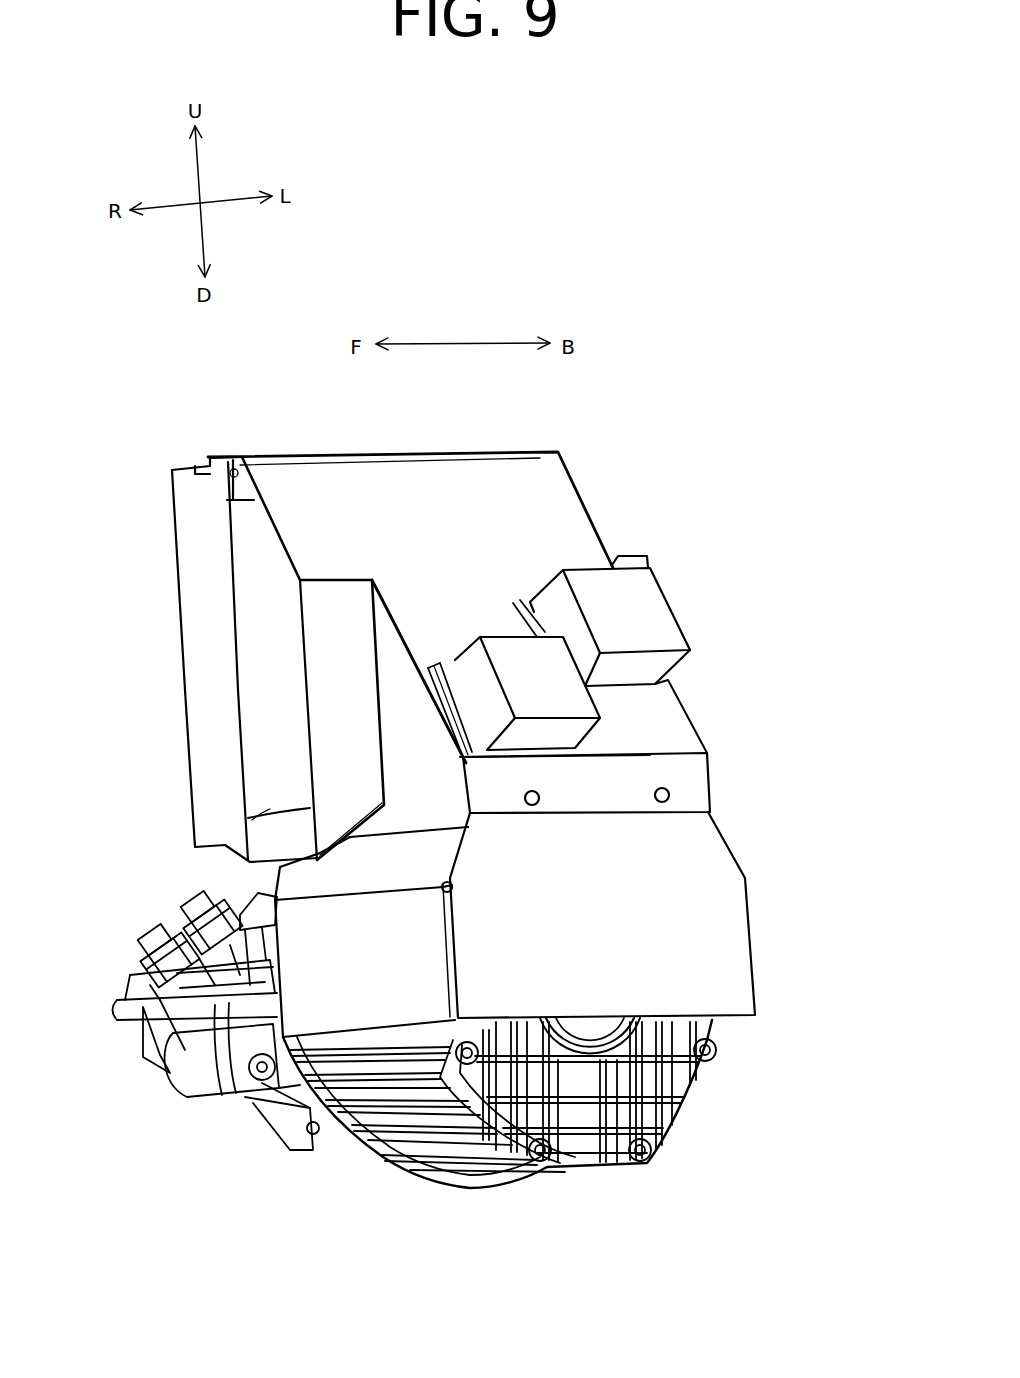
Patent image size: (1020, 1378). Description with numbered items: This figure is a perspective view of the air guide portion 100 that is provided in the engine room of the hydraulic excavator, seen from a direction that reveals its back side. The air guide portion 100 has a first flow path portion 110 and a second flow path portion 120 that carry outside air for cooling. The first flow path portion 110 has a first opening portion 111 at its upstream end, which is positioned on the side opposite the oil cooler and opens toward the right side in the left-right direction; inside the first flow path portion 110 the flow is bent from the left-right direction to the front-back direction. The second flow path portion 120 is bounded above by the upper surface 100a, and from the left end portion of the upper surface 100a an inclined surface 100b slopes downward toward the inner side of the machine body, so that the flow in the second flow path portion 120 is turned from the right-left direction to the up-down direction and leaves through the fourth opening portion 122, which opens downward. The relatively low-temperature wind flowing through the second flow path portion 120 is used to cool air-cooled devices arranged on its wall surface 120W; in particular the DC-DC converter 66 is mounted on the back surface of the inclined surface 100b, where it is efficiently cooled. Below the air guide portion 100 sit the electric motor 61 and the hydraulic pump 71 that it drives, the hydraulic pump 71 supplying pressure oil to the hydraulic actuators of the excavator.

The air guide portion 100 is at (707, 452).
The upper surface 100a is at (201, 464).
The inclined surface 100b is at (442, 500).
The first flow path portion 110 is at (262, 637).
The first opening portion 111 is at (244, 737).
The DC-DC converter 66 is at (500, 648).
The wall surface 120W is at (655, 725).
The second flow path portion 120 is at (752, 858).
The fourth opening portion 122 is at (738, 1018).
The electric motor 61 is at (453, 1157).
The hydraulic pump 71 is at (197, 1078).